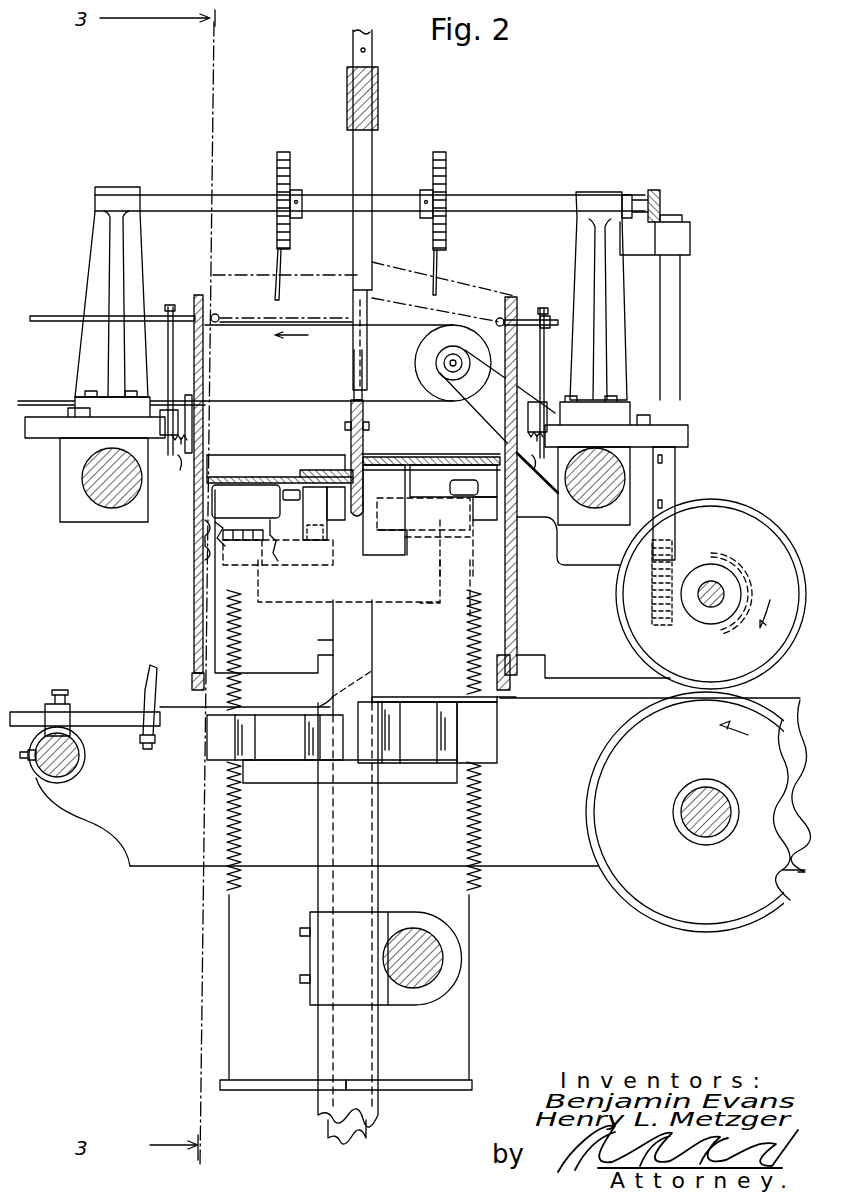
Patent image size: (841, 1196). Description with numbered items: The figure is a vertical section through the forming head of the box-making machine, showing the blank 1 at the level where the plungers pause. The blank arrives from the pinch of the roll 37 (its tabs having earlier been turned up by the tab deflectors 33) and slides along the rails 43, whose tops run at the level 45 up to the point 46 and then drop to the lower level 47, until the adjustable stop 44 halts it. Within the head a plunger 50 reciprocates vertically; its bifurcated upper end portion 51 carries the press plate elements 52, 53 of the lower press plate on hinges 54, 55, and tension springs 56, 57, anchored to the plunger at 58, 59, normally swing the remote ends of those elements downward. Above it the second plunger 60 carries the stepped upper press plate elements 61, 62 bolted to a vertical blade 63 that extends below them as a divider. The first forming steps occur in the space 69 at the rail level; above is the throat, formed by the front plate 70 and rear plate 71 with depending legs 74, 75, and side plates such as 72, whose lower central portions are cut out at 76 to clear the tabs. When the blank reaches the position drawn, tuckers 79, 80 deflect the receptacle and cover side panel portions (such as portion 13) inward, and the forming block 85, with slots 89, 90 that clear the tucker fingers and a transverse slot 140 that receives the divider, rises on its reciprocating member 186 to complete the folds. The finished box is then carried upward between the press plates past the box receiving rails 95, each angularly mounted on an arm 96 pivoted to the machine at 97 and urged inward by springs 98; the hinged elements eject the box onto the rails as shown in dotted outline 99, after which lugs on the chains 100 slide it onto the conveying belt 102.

The blank 1 is at (440, 470).
The cover side panel portion 13 is at (487, 522).
The tab deflectors 33 is at (628, 913).
The roll 37 is at (750, 522).
The rails 43 is at (553, 868).
The adjustable stop 44 is at (146, 700).
The rail top level 45 is at (590, 699).
The point 46 is at (373, 682).
The lower level 47 is at (290, 711).
The plunger 50 is at (372, 630).
The bifurcated upper end portion 51 is at (348, 512).
The press plate element 52 is at (262, 481).
The press plate element 53 is at (429, 469).
The hinge 54 is at (300, 477).
The hinge 55 is at (462, 466).
The tension spring 56 is at (240, 645).
The tension spring 57 is at (468, 641).
The spring anchor 58 is at (230, 1082).
The spring anchor 59 is at (472, 1085).
The second plunger 60 is at (372, 240).
The upper press plate element 61 is at (340, 470).
The upper press plate element 62 is at (373, 460).
The vertical blade 63 is at (363, 405).
The space 69 is at (409, 692).
The front plate 70 is at (514, 590).
The rear plate 71 is at (193, 598).
The side plate 72 is at (342, 581).
The depending leg 74 is at (512, 685).
The depending leg 75 is at (200, 684).
The cut-out 76 is at (330, 644).
The tucker 79 is at (225, 540).
The tucker 80 is at (440, 520).
The forming block 85 is at (494, 748).
The slots 89 is at (301, 749).
The slots 90 is at (390, 741).
The box receiving rails 95 is at (218, 315).
The arm 96 is at (609, 296).
The pivotal connection 97 is at (178, 422).
The springs 98 is at (352, 468).
The dotted outline 99 is at (290, 312).
The chains 100 is at (285, 158).
The conveying belt 102 is at (268, 403).
The transverse slot 140 is at (346, 741).
The column 186 is at (380, 856).